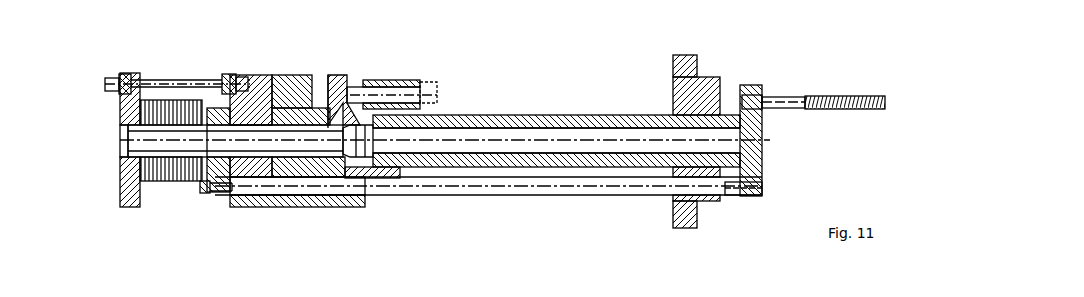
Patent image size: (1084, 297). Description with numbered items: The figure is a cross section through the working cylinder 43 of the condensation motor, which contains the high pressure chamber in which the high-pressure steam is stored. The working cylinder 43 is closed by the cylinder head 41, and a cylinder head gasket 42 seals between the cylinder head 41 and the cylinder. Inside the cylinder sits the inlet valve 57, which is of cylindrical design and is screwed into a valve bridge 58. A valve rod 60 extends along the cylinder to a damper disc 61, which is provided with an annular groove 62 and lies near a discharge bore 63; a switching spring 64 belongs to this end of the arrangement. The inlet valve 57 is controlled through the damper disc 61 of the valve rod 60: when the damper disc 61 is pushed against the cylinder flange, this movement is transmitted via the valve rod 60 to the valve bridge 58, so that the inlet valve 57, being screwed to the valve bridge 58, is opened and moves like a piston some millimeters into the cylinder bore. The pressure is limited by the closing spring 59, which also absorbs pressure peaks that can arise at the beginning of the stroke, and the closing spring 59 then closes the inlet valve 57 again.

The cylinder head 41 is at (337, 80).
The cylinder head gasket 42 is at (373, 115).
The working cylinder 43 is at (487, 118).
The inlet valve 57 is at (318, 150).
The valve bridge 58 is at (218, 188).
The closing spring 59 is at (170, 176).
The valve rod 60 is at (470, 183).
The damper disc 61 is at (748, 88).
The annular groove 62 is at (764, 108).
The discharge bore 63 is at (762, 100).
The switching spring 64 is at (855, 100).